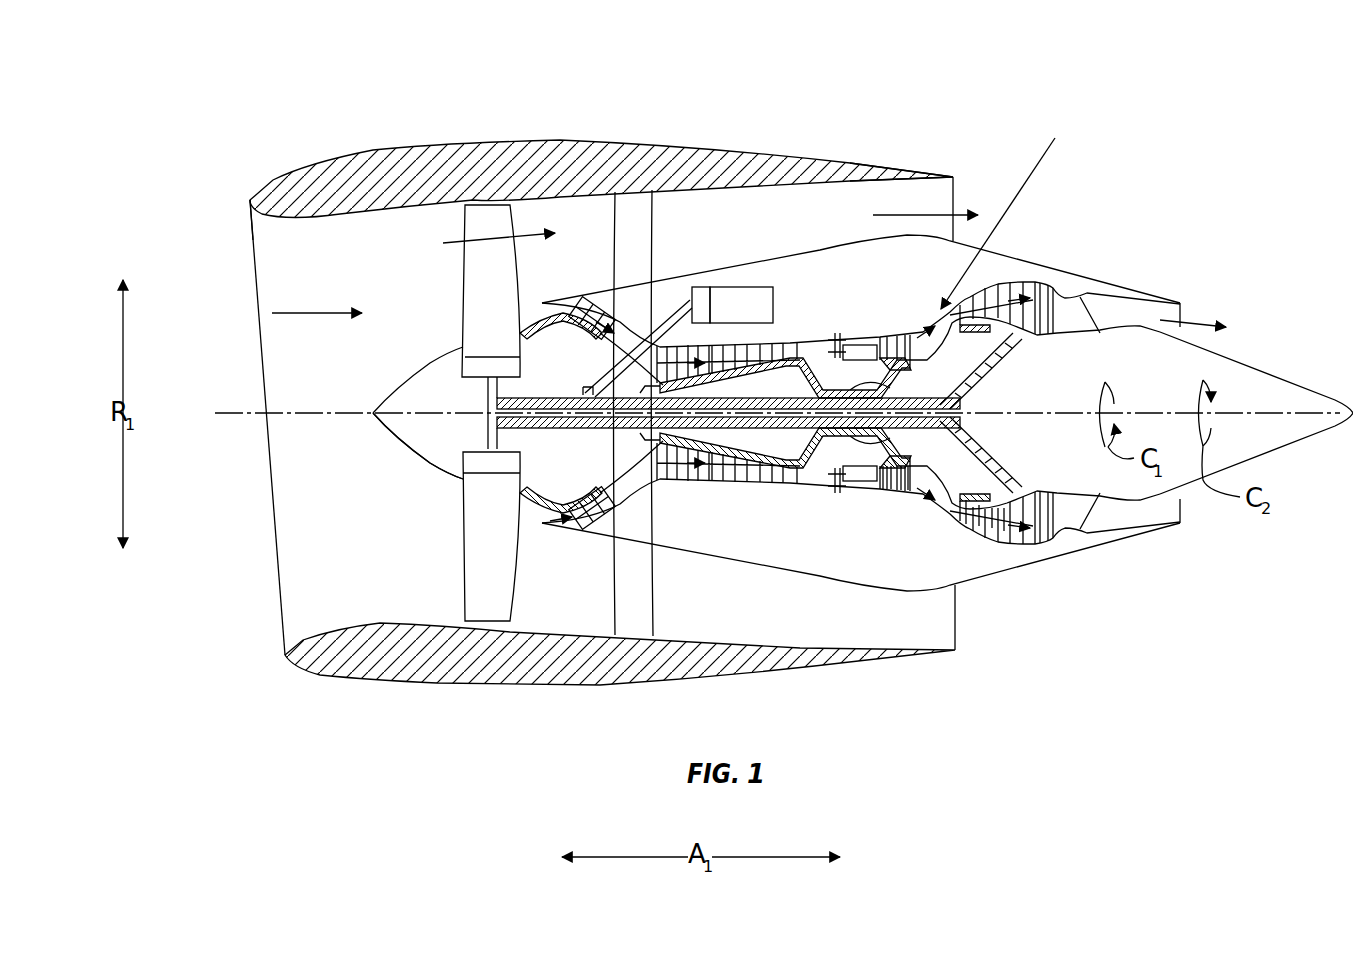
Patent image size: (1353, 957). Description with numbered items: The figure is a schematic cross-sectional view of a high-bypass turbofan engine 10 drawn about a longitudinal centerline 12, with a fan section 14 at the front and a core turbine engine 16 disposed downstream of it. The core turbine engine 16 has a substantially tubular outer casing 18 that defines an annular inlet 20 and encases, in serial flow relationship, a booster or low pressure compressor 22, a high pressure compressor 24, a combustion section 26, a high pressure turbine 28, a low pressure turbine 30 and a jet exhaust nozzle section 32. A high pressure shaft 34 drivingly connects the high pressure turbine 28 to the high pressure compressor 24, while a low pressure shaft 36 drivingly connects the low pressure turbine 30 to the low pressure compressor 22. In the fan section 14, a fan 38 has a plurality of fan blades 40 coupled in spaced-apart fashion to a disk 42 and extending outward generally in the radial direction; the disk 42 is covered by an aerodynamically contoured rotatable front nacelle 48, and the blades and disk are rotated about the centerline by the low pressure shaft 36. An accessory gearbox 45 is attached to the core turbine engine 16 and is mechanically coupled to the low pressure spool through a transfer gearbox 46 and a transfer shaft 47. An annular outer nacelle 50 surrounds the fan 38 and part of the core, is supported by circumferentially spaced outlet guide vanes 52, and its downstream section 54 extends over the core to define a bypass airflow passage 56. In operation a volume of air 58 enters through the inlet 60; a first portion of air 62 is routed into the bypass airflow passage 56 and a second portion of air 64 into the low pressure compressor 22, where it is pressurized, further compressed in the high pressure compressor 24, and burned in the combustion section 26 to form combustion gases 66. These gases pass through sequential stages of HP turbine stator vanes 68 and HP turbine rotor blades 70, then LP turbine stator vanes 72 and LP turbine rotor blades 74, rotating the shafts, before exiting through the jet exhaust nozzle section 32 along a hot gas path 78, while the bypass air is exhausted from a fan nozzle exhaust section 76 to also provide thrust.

The turbofan engine 10 is at (1100, 152).
The longitudinal centerline 12 is at (1120, 413).
The fan section 14 is at (500, 106).
The core turbine engine 16 is at (827, 300).
The outer casing 18 is at (813, 582).
The annular inlet 20 is at (555, 532).
The low pressure compressor 22 is at (609, 498).
The high pressure compressor 24 is at (683, 470).
The combustion section 26 is at (855, 479).
The high pressure turbine 28 is at (930, 488).
The low pressure turbine 30 is at (1038, 535).
The jet exhaust nozzle section 32 is at (1100, 520).
The high pressure shaft 34 is at (897, 370).
The low pressure shaft 36 is at (987, 375).
The fan 38 is at (428, 468).
The fan blades 40 is at (460, 565).
The disk 42 is at (485, 368).
The accessory gearbox 45 is at (763, 287).
The transfer gearbox 46 is at (708, 285).
The transfer shaft 47 is at (620, 300).
The rotatable front nacelle 48 is at (385, 432).
The outer nacelle 50 is at (505, 690).
The outlet guide vanes 52 is at (653, 222).
The downstream section 54 is at (880, 167).
The bypass airflow passage 56 is at (867, 222).
The volume of air 58 is at (300, 313).
The inlet 60 is at (285, 633).
The first portion of air 62 is at (463, 230).
The second portion of air 64 is at (542, 303).
The combustion gases 66 is at (1000, 285).
The HP turbine stator vanes 68 is at (870, 488).
The HP turbine rotor blades 70 is at (900, 453).
The LP turbine stator vanes 72 is at (973, 528).
The LP turbine rotor blades 74 is at (977, 537).
The fan nozzle exhaust section 76 is at (943, 200).
The hot gas path 78 is at (1007, 208).